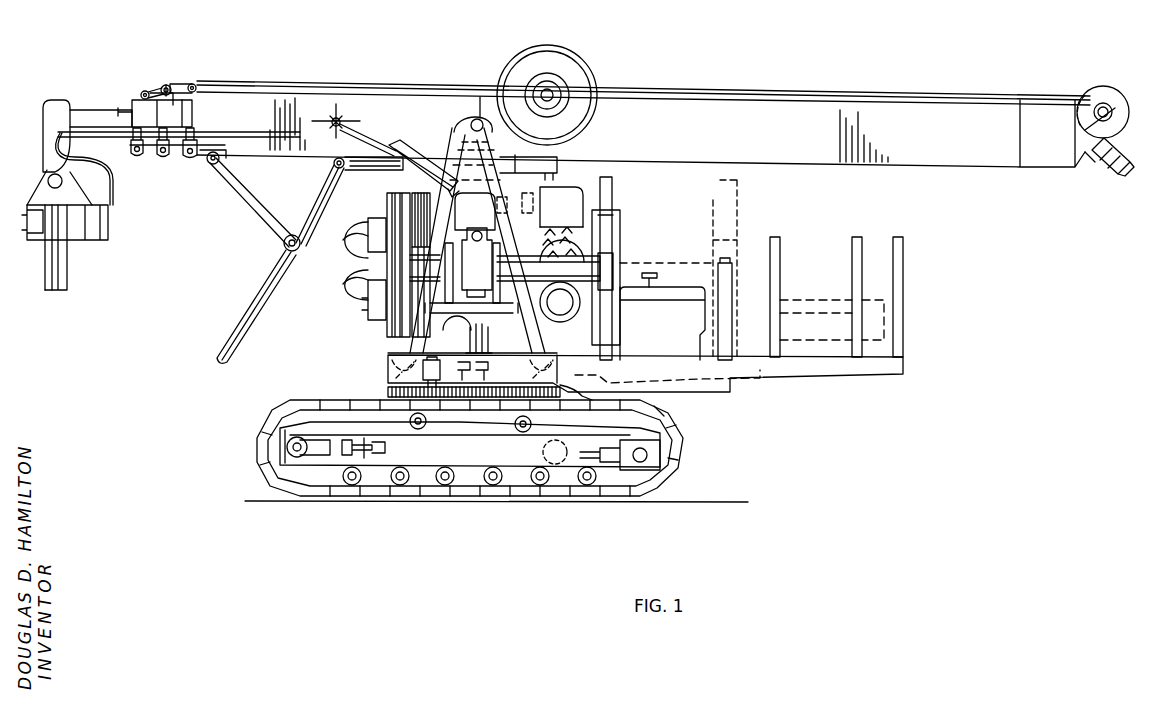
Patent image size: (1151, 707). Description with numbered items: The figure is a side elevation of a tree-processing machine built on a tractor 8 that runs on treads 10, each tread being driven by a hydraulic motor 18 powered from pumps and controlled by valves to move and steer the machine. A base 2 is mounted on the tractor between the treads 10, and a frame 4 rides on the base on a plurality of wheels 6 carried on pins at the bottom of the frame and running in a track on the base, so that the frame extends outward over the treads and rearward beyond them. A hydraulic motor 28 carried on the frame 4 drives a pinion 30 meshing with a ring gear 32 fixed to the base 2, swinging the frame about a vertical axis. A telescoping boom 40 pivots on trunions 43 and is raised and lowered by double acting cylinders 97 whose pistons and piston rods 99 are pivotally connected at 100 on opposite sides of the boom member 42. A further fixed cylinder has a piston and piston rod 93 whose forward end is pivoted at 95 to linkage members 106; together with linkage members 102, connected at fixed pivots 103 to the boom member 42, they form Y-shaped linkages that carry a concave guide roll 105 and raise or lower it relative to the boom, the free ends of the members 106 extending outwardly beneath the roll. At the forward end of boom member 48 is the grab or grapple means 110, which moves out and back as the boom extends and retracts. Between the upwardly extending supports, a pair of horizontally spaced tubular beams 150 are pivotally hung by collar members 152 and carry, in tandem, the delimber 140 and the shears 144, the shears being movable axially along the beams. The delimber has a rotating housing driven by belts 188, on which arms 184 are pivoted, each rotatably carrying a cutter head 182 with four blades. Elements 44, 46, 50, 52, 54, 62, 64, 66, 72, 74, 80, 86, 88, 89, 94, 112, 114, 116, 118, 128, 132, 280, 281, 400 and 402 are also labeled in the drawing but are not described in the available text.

The base 2 is at (390, 433).
The frame 4 is at (386, 358).
The wheels 6 is at (386, 373).
The tractor 8 is at (422, 460).
The treads 10 is at (258, 443).
The hydraulic motors 18 is at (545, 450).
The hydraulic motor 28 is at (422, 372).
The pinion 30 is at (388, 392).
The ring gear 32 is at (580, 397).
The boom 40 is at (946, 162).
The boom member 42 is at (904, 106).
The trunions 43 is at (464, 122).
The carrier bracket 44 is at (179, 110).
The carrier housing 46 is at (166, 112).
The boom member 48 is at (80, 108).
The link 50 is at (186, 84).
The link 52 is at (165, 85).
The link 54 is at (138, 93).
The rod clamp 62 is at (190, 160).
The rod clamp 64 is at (163, 157).
The rod clamp 66 is at (137, 156).
The engine 72 is at (684, 286).
The mast 74 is at (463, 188).
The boom tip sheave 80 is at (1105, 98).
The hook block 86 is at (1118, 172).
The hook link 88 is at (1082, 162).
The hoist line 89 is at (745, 98).
The piston and piston rod 93 is at (364, 186).
The bracket 94 is at (126, 106).
The pivot 95 is at (334, 162).
The double acting cylinders 97 is at (408, 146).
The piston and piston rod 99 is at (382, 136).
The pivotal connection 100 is at (338, 116).
The linkage members 102 is at (252, 206).
The fixed pivots 103 is at (220, 162).
The concave guide roll 105 is at (294, 252).
The linkage members 106 is at (246, 314).
The grab or grapple means 110 is at (62, 92).
The gripper jaw 112 is at (42, 292).
The jaw plate 114 is at (60, 290).
The jaw plate 116 is at (54, 276).
The jaw actuator 118 is at (106, 242).
The hydraulic line 128 is at (253, 131).
The sheave 132 is at (556, 46).
The delimber 140 is at (378, 208).
The shears 144 is at (625, 202).
The tubular beams 150 is at (548, 289).
The collar members 152 is at (478, 262).
The cutter heads 182 is at (346, 272).
The arm 184 is at (368, 228).
The belts 188 is at (426, 192).
The drum 280 is at (451, 304).
The gear box 281 is at (584, 192).
The post 400 is at (852, 236).
The post 402 is at (903, 262).